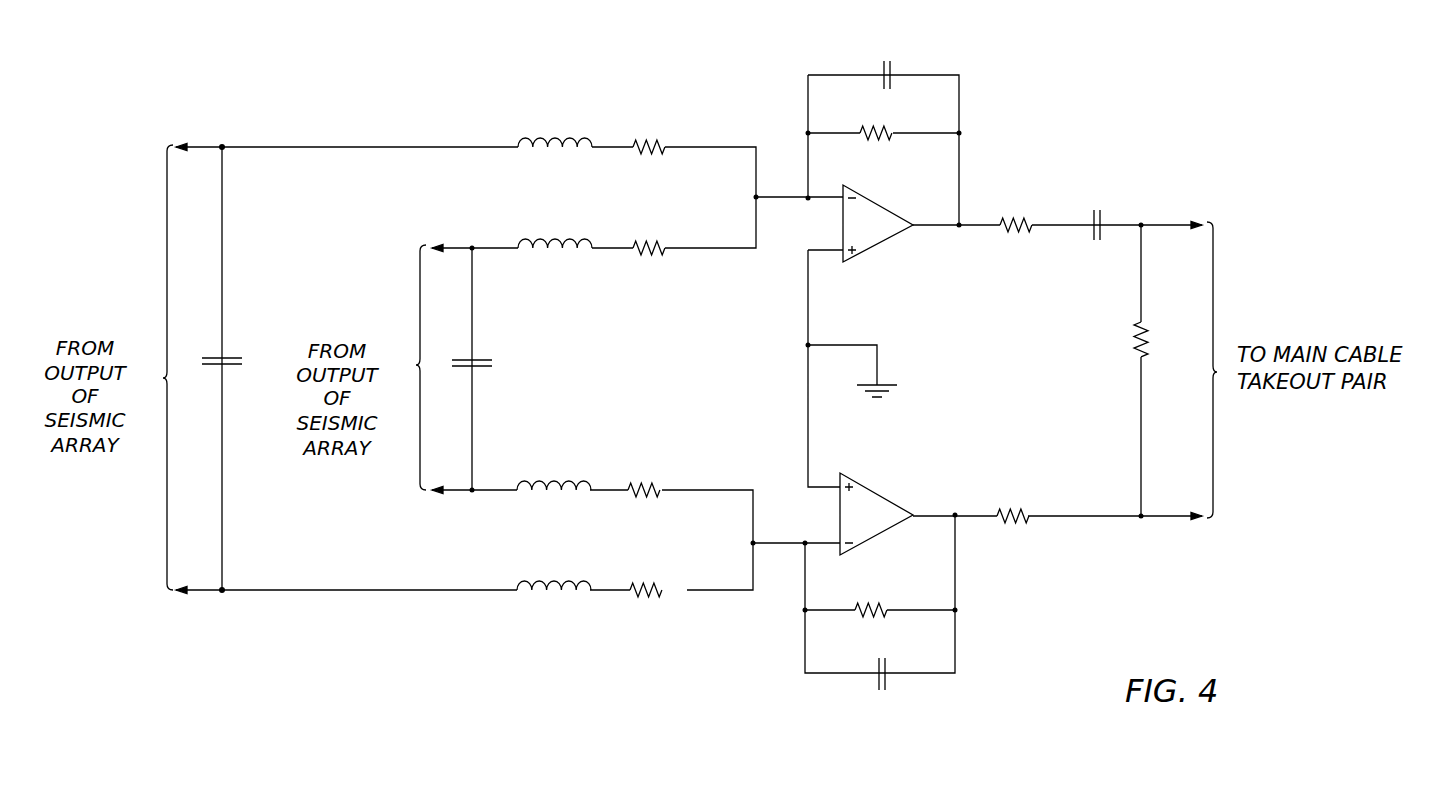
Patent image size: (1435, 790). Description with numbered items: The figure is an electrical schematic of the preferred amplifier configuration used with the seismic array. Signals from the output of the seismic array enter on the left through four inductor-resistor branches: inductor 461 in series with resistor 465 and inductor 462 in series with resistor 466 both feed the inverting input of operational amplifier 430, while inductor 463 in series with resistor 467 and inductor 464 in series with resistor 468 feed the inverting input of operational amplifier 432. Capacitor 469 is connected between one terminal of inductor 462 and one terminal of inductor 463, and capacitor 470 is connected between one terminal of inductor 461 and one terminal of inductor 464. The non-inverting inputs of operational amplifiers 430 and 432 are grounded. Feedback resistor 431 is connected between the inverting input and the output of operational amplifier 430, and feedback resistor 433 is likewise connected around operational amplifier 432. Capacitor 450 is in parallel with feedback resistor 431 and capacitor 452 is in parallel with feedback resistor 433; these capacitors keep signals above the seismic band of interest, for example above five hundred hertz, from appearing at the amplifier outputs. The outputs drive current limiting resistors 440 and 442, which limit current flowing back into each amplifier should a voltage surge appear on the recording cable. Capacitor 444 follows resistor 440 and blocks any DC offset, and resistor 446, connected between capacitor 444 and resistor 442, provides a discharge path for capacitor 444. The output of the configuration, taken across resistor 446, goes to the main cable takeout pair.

The operational amplifier 430 is at (886, 205).
The operational amplifier 432 is at (885, 530).
The feedback resistor 431 is at (893, 128).
The feedback resistor 433 is at (887, 613).
The capacitor 450 is at (892, 62).
The capacitor 452 is at (890, 681).
The current limiting resistor 440 is at (1026, 218).
The current limiting resistor 442 is at (1021, 526).
The capacitor 444 is at (1103, 218).
The resistor 446 is at (1133, 340).
The inductor 461 is at (558, 137).
The inductor 462 is at (562, 239).
The inductor 463 is at (561, 495).
The inductor 464 is at (561, 596).
The resistor 465 is at (658, 137).
The resistor 466 is at (663, 240).
The resistor 467 is at (655, 495).
The resistor 468 is at (652, 596).
The capacitor 469 is at (490, 359).
The capacitor 470 is at (228, 356).